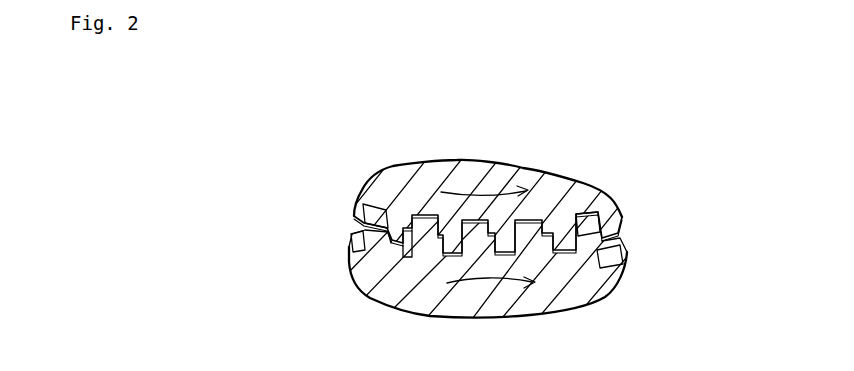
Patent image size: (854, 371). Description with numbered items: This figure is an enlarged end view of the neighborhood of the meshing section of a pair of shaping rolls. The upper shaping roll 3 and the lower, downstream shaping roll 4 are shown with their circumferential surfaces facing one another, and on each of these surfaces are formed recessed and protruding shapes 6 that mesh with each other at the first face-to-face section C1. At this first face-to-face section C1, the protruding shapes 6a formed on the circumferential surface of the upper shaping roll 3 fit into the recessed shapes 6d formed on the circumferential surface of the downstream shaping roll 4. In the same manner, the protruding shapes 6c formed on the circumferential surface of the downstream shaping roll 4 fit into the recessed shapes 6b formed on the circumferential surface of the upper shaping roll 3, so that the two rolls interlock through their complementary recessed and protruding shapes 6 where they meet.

The shaping roll 3 is at (378, 185).
The downstream shaping roll 4 is at (608, 293).
The recessed and protruding shapes 6 is at (477, 233).
The protruding shapes 6a is at (357, 227).
The recessed shapes 6b is at (387, 227).
The protruding shapes 6c is at (598, 246).
The recessed shapes 6d is at (598, 262).
The first face-to-face section C1 is at (462, 210).